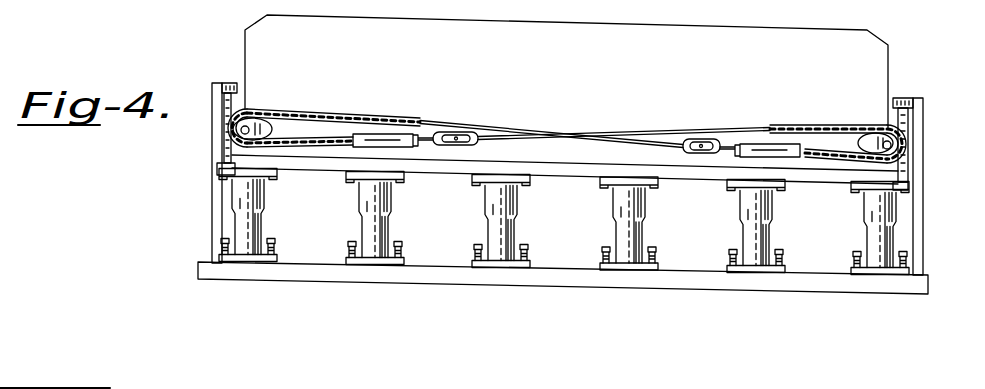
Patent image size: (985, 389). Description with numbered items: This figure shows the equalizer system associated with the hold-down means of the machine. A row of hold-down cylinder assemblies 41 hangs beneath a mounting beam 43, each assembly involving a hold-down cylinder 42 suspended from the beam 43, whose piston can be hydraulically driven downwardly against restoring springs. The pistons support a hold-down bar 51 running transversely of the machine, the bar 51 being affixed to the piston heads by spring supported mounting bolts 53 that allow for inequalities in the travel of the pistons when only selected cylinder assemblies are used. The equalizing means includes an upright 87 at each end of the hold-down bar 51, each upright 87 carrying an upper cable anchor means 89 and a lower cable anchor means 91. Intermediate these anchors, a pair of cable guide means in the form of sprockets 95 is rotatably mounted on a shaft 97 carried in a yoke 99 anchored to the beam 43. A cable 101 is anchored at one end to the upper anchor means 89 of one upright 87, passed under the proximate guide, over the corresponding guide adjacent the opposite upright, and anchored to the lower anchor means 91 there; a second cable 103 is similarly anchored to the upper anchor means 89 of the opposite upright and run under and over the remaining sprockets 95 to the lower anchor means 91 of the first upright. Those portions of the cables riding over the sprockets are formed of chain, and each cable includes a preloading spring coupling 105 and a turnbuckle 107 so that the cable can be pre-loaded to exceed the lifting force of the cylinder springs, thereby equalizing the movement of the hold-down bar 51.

The hold-down cylinder assembly 41 is at (533, 205).
The hold-down cylinder 42 is at (372, 191).
The beam 43 is at (862, 60).
The hold-down bar 51 is at (572, 282).
The spring supported mounting bolt 53 is at (480, 249).
The upright 87 is at (213, 166).
The upper cable anchor means 89 is at (237, 88).
The lower cable anchor means 91 is at (221, 172).
The sprocket 95 is at (255, 112).
The shaft 97 is at (248, 133).
The yoke 99 is at (273, 131).
The cable 101 is at (440, 122).
The cable 103 is at (732, 130).
The preloading spring coupling 105 is at (395, 141).
The turnbuckle 107 is at (472, 141).